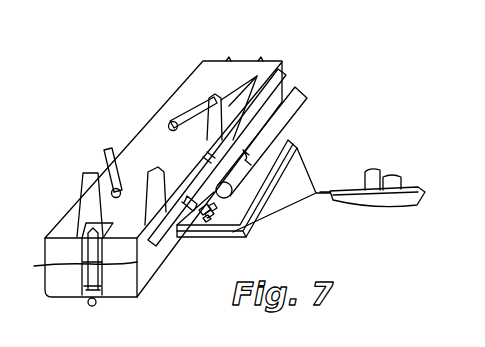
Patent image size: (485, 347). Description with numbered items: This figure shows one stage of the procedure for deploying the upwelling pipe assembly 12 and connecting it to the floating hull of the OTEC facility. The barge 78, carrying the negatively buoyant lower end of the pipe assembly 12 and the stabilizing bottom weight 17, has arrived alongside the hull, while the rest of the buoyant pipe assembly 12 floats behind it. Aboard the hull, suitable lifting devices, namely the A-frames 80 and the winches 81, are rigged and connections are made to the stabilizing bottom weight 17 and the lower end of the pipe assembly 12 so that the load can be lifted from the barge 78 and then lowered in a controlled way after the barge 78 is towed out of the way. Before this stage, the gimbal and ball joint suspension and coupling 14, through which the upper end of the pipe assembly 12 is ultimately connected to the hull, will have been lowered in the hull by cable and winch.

The upwelling pipe assembly 12 is at (296, 115).
The gimbal and ball joint suspension and coupling 14 is at (89, 300).
The stabilizing bottom weight 17 is at (214, 226).
The barge 78 is at (251, 205).
The A-frames 80 is at (171, 124).
The winches 81 is at (104, 154).